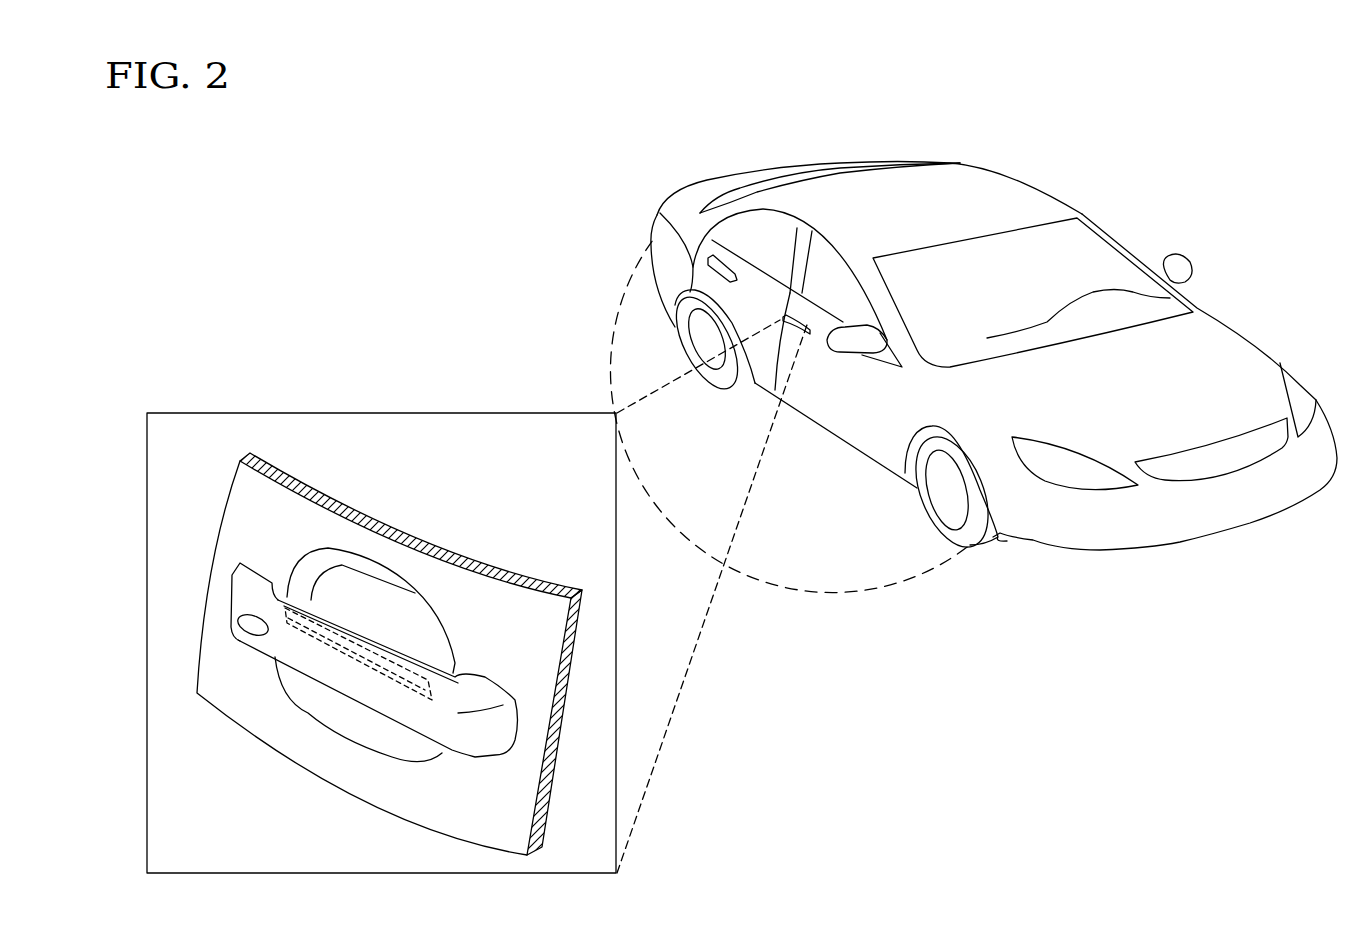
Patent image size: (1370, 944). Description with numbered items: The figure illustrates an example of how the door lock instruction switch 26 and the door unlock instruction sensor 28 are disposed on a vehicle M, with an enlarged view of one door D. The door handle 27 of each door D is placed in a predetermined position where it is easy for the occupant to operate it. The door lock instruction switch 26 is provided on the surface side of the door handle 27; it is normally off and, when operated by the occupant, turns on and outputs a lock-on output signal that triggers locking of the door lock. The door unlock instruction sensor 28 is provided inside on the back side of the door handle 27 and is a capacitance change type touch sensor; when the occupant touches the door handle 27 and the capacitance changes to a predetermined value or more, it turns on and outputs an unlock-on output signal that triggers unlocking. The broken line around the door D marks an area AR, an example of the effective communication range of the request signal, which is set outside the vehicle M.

The vehicle M is at (792, 168).
The door D is at (707, 282).
The area AR is at (873, 590).
The door lock instruction switch 26 is at (233, 620).
The door handle 27 is at (472, 748).
The door unlock instruction sensor 28 is at (370, 660).